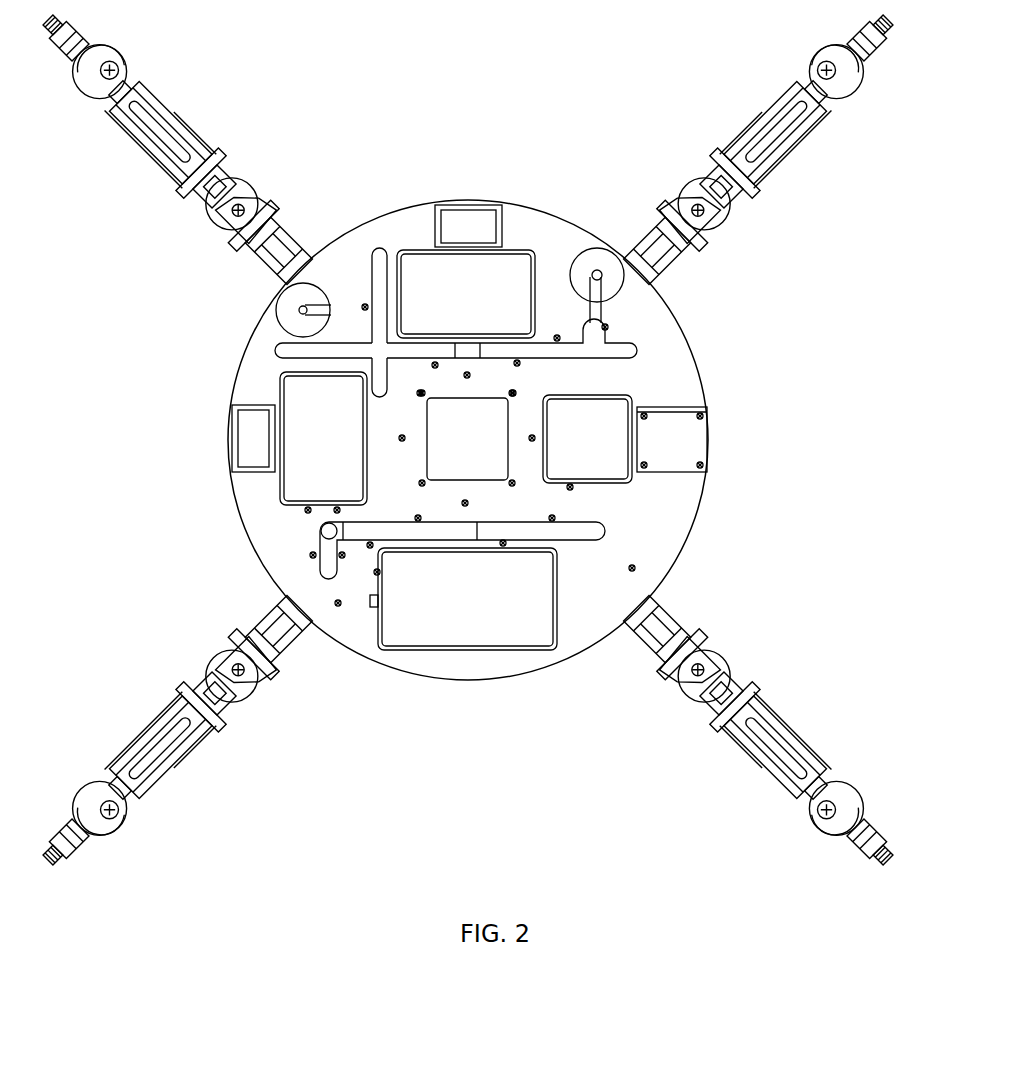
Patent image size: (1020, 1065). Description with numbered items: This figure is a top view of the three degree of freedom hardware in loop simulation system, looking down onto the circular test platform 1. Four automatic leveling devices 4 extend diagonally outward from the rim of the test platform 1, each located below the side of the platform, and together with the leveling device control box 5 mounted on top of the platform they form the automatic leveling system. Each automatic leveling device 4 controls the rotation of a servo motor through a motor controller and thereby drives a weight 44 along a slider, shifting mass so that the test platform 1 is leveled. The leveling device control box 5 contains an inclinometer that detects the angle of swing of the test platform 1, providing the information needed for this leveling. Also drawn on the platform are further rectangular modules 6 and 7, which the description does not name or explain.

The test platform 1 is at (549, 440).
The automatic leveling device 4 is at (780, 146).
The weight 44 is at (194, 282).
The leveling device control box 5 is at (282, 452).
The side module 6 is at (753, 397).
The bottom module 7 is at (497, 645).